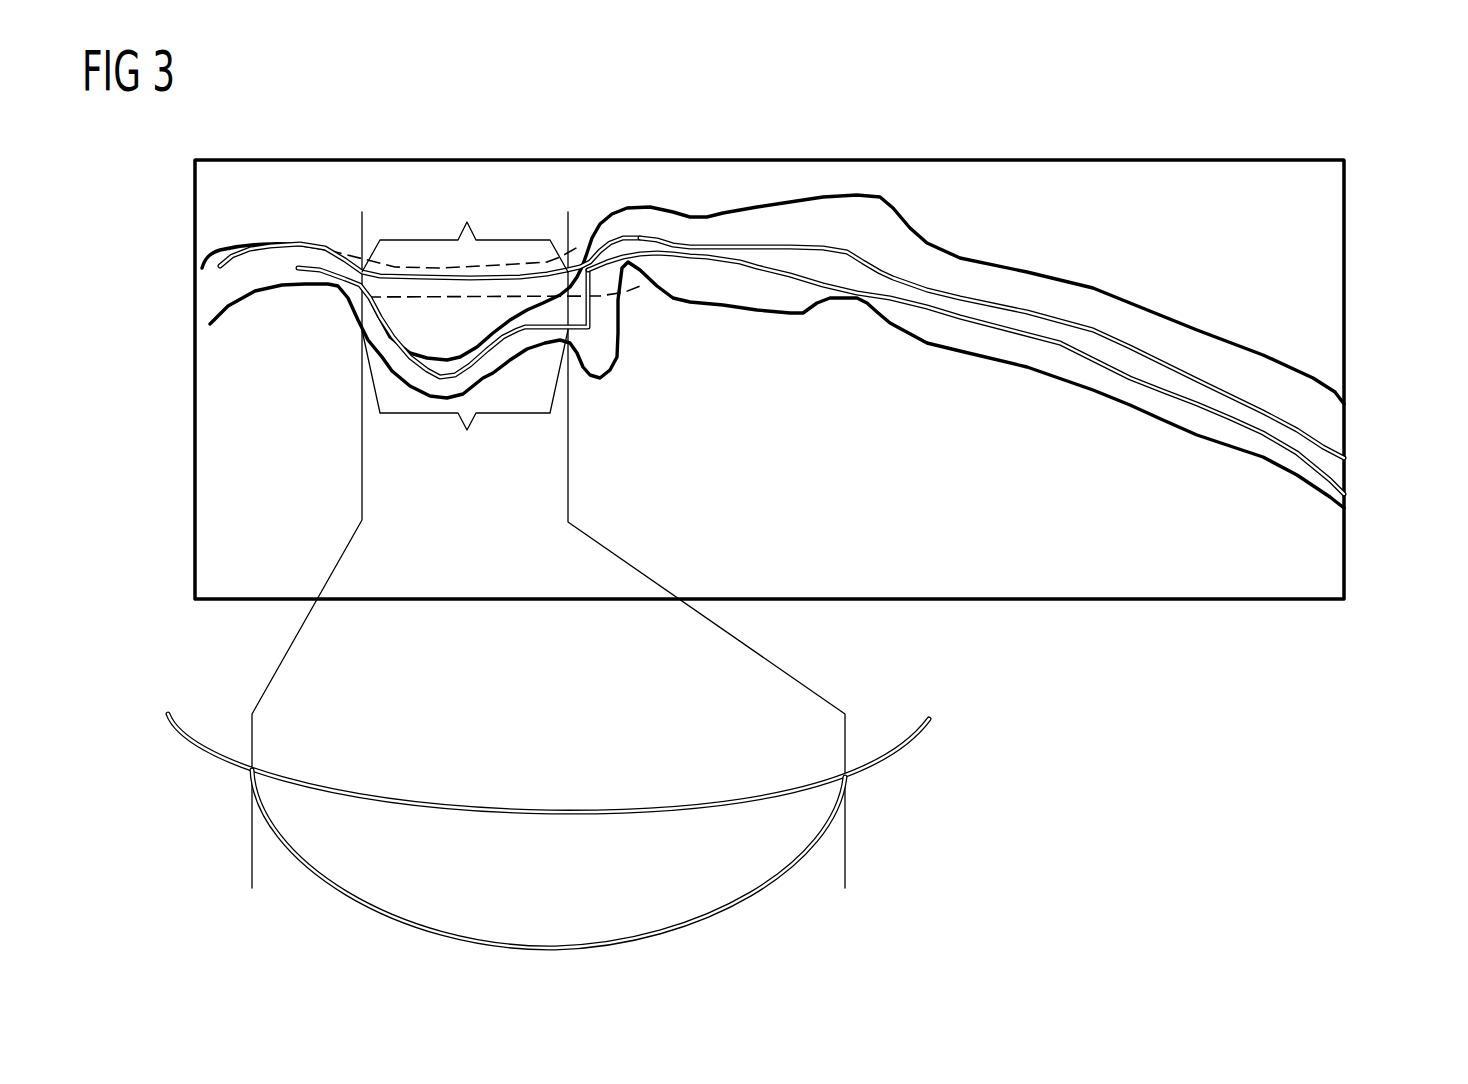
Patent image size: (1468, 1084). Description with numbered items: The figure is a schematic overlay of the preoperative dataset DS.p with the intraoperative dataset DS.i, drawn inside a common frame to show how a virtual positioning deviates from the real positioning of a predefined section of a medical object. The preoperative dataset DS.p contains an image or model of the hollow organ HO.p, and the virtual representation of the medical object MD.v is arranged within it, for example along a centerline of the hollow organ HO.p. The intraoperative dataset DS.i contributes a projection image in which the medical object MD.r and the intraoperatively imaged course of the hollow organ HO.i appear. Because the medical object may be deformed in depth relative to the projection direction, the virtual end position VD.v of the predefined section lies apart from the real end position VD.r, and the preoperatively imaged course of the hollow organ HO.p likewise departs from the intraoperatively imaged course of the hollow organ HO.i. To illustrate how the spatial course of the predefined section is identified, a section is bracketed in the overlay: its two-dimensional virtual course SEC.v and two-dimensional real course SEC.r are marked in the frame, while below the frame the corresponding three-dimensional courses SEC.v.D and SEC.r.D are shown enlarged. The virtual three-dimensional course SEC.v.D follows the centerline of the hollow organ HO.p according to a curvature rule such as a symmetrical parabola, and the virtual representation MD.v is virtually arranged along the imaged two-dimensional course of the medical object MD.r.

The preoperative dataset DS.p is at (1108, 601).
The intraoperative dataset DS.i is at (769, 379).
The preoperatively imaged hollow organ HO.p is at (1118, 298).
The intraoperatively imaged hollow organ HO.i is at (417, 265).
The real end position of the predefined section VD.r is at (220, 268).
The virtual end position of the predefined section VD.v is at (298, 270).
The medical object imaged in the intraoperative dataset MD.r is at (1143, 385).
The virtual representation of the medical object MD.v is at (1323, 450).
The two-dimensional course of the real section SEC.r is at (465, 227).
The two-dimensional course of the virtual section SEC.v is at (465, 401).
The three-dimensional course of the real section SEC.r.D is at (595, 808).
The three-dimensional course of the virtual section SEC.v.D is at (607, 945).